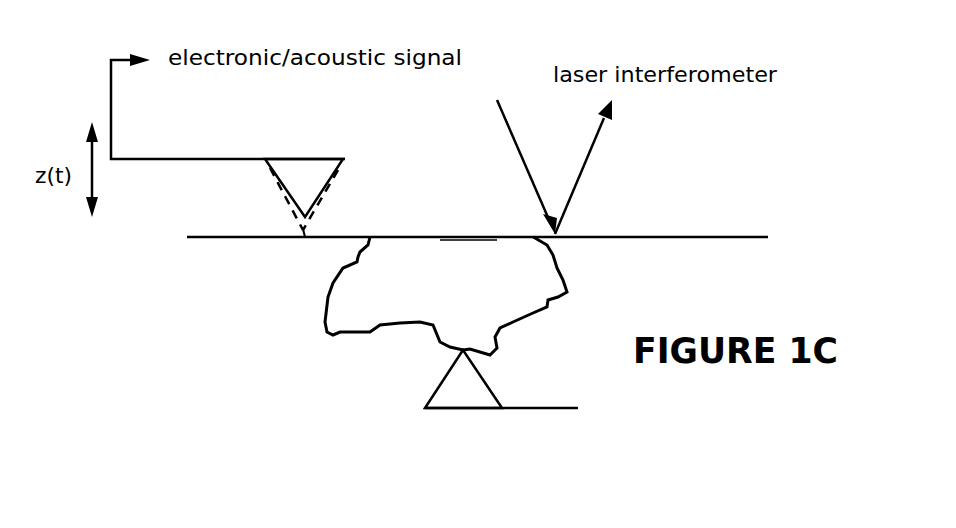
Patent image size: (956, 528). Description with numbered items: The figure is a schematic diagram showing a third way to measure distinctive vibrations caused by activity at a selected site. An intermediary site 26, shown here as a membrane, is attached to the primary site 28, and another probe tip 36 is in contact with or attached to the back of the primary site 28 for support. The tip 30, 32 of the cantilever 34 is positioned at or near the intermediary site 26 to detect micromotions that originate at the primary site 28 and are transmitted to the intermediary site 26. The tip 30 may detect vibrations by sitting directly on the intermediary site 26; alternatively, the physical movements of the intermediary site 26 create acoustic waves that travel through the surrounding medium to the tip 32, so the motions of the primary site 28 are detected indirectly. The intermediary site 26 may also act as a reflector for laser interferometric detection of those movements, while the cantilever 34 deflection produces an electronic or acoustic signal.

The intermediary site 26 is at (688, 237).
The primary site 28 is at (325, 333).
The tip 30 is at (305, 237).
The tip 32 is at (310, 216).
The cantilever 34 is at (207, 159).
The probe tip 36 is at (455, 395).